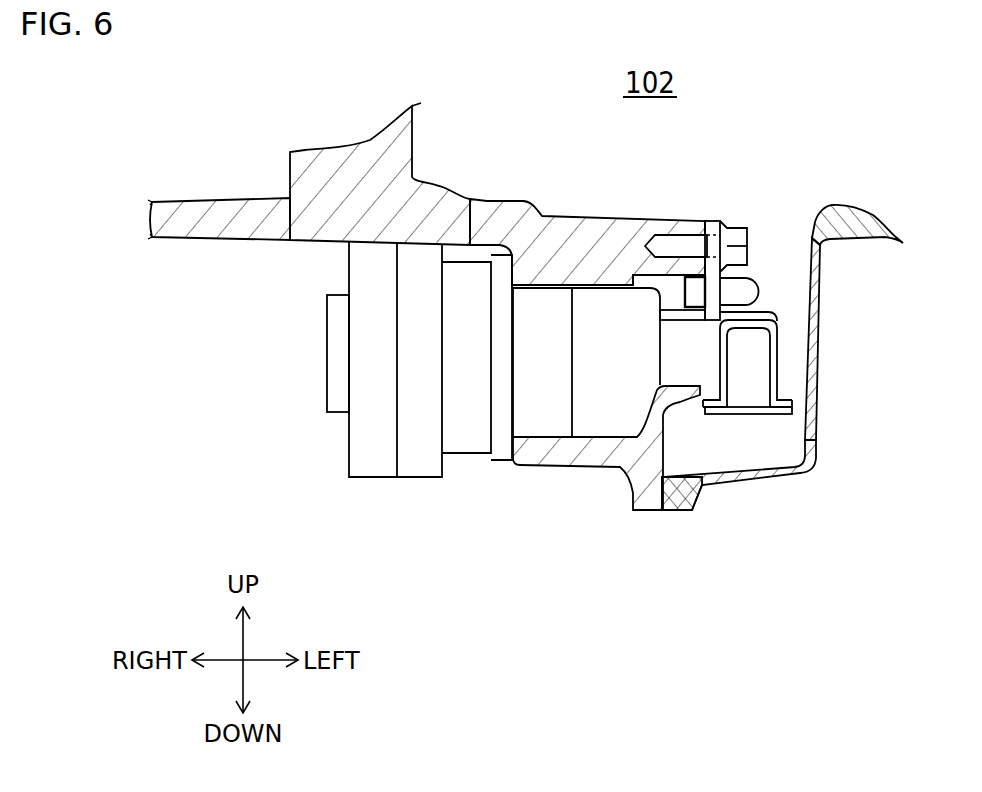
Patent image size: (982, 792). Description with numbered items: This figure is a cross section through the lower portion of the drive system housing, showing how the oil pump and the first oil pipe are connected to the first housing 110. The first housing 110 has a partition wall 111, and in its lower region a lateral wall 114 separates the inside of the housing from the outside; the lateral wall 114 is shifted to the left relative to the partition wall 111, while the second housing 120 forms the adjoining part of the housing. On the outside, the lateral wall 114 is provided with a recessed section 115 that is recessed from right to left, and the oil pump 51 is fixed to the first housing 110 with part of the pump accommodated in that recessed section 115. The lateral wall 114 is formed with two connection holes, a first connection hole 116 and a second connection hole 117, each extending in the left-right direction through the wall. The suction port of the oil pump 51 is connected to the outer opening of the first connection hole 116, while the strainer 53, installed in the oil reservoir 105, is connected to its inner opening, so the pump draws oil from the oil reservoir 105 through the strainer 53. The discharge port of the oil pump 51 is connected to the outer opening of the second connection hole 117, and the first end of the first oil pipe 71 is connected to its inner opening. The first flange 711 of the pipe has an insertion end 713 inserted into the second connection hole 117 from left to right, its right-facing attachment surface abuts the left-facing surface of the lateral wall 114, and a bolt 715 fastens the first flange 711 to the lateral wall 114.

The first housing 110 is at (190, 232).
The partition wall 111 is at (417, 131).
The lateral wall 114 is at (655, 218).
The recessed section 115 is at (560, 435).
The first connection hole 116 is at (675, 377).
The second connection hole 117 is at (653, 277).
The second housing 120 is at (855, 242).
The oil reservoir 105 is at (757, 447).
The oil pump 51 is at (467, 455).
The strainer 53 is at (780, 364).
The first oil pipe 71 is at (758, 288).
The first flange 711 is at (714, 220).
The insertion end 713 is at (702, 306).
The bolt 715 is at (728, 222).